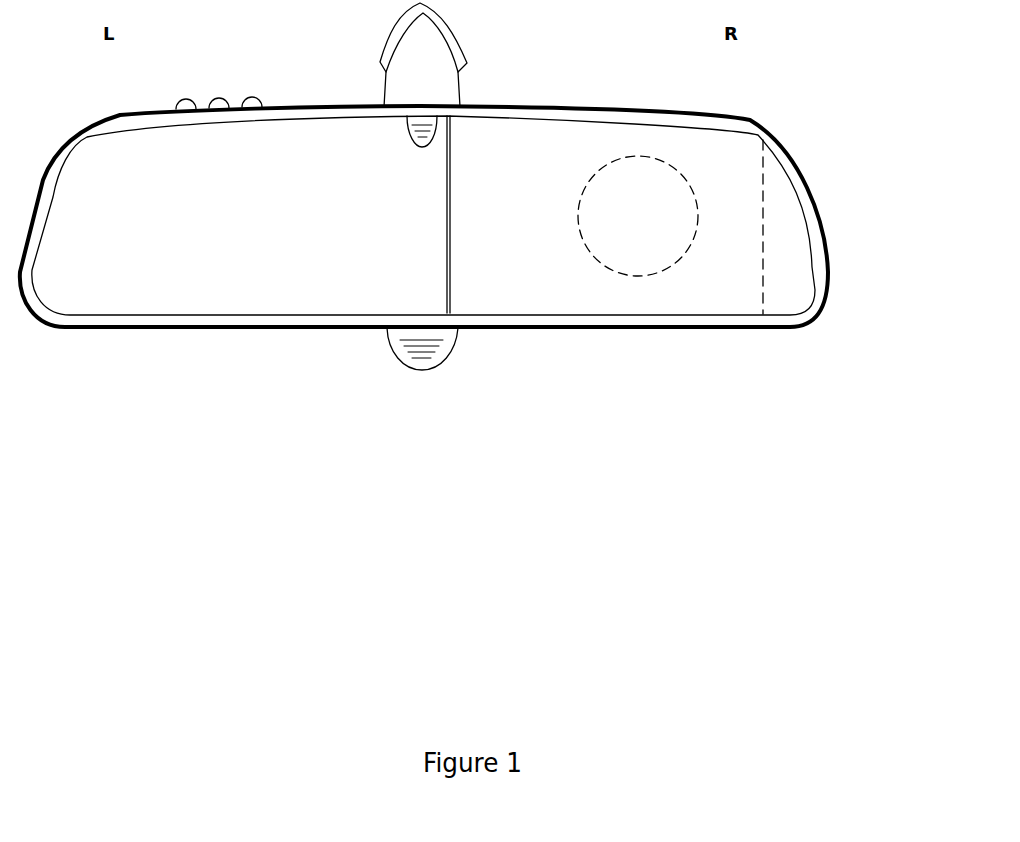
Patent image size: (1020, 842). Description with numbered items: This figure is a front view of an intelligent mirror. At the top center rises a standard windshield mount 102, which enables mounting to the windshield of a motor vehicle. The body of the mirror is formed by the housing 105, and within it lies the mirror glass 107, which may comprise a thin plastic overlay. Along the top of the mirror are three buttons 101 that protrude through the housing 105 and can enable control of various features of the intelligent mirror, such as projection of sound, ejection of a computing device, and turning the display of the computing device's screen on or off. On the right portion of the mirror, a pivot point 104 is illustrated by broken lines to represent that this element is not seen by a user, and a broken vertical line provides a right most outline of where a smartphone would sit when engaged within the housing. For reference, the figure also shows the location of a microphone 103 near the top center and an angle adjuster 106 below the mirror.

The buttons 101 is at (219, 96).
The windshield mount 102 is at (470, 43).
The microphone 103 is at (434, 125).
The pivot point 104 is at (672, 160).
The housing 105 is at (836, 242).
The angle adjuster 106 is at (458, 357).
The mirror glass 107 is at (160, 289).